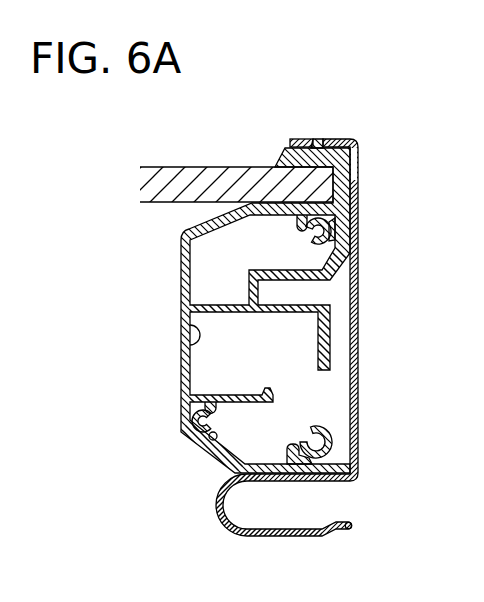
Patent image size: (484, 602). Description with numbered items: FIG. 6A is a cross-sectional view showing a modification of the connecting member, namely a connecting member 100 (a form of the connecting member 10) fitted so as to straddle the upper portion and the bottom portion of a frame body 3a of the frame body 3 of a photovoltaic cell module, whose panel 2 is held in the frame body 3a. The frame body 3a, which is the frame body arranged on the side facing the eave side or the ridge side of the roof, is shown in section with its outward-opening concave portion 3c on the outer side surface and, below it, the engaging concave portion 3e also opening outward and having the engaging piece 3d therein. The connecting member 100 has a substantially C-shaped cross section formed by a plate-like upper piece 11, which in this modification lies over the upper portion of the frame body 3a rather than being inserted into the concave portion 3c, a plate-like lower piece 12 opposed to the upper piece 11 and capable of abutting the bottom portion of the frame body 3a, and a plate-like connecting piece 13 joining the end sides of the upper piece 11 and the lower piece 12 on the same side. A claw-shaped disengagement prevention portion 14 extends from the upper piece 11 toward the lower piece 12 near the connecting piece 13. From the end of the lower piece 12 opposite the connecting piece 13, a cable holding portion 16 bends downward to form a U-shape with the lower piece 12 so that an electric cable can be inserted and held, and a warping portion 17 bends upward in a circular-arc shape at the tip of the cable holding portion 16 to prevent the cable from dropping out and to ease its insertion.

The display panel 2 is at (200, 178).
The upper piece 11 is at (300, 138).
The disengagement prevention portion 14 is at (321, 139).
The display device 100 is at (367, 283).
The connecting member 10 is at (267, 336).
The frame body 3 is at (231, 320).
The frame body 3a is at (213, 460).
The concave portion 3c is at (262, 292).
The engaging concave portion 3e is at (182, 331).
The engaging piece 3d is at (248, 397).
The lower piece 12 is at (275, 463).
The connecting piece 13 is at (358, 353).
The cable holding portion 16 is at (288, 538).
The warping portion 17 is at (351, 521).